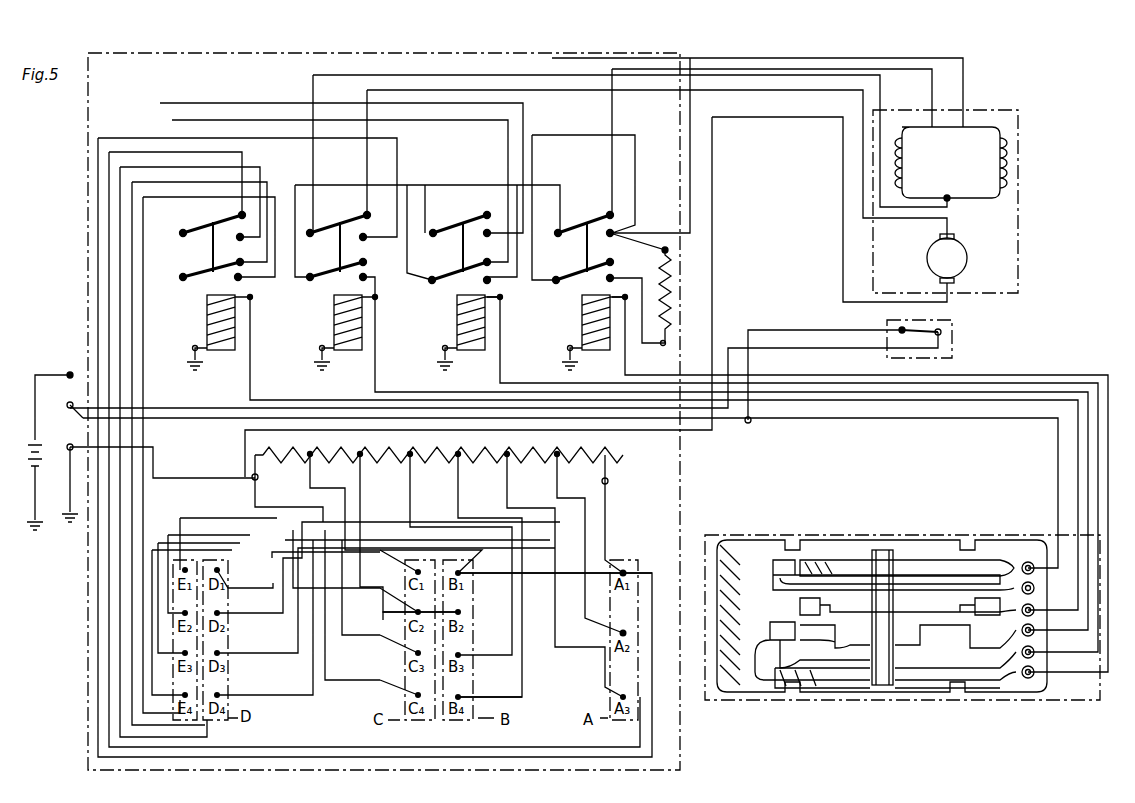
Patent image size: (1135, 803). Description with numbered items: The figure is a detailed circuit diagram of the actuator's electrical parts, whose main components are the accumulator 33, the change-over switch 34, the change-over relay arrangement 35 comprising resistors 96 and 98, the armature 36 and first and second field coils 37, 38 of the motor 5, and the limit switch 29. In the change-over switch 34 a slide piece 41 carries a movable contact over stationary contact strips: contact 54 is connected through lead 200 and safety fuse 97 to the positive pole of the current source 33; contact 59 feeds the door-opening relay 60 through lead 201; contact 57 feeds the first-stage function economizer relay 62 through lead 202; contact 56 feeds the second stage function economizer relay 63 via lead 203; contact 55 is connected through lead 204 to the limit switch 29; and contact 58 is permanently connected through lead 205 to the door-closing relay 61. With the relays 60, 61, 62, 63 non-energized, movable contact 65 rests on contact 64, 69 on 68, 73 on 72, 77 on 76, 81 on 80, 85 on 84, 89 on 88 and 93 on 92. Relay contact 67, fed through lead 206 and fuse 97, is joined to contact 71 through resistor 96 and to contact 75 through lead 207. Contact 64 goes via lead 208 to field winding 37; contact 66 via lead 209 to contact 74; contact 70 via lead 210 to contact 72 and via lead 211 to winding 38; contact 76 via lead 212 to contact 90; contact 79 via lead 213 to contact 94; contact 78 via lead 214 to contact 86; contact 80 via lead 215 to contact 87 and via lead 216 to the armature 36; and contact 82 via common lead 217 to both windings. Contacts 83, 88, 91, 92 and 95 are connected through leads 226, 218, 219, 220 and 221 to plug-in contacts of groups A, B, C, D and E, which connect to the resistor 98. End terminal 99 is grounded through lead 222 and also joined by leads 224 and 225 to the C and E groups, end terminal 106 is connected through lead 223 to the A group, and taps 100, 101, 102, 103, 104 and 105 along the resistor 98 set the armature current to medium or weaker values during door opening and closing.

The motor 5 is at (1018, 240).
The limit switch 29 is at (887, 324).
The accumulator 33 is at (42, 460).
The change-over switch 34 is at (885, 700).
The change-over relay arrangement 35 is at (680, 742).
The armature 36 is at (927, 256).
The first field coil 37 is at (901, 157).
The second field coil 38 is at (1001, 157).
The slide piece 41 is at (882, 550).
The stationary contact strip 54 is at (838, 560).
The stationary contact 55 is at (780, 560).
The stationary contact 56 is at (798, 605).
The stationary contact 57 is at (830, 625).
The stationary contact 58 is at (765, 622).
The stationary contact 59 is at (825, 688).
The door-opening relay 60 is at (595, 352).
The door-closing relay 61 is at (470, 352).
The first-stage function economizer relay 62 is at (347, 352).
The second stage function economizer relay 63 is at (220, 352).
The stationary contact 64 is at (606, 210).
The movable relay contact 65 is at (586, 225).
The relay contact 66 is at (557, 221).
The relay contact 67 is at (602, 242).
The stationary contact 68 is at (614, 262).
The movable relay contact 69 is at (578, 274).
The relay contact 70 is at (555, 269).
The relay contact 71 is at (614, 280).
The stationary contact 72 is at (484, 212).
The movable relay contact 73 is at (461, 225).
The relay contact 74 is at (434, 221).
The relay contact 75 is at (478, 240).
The stationary contact 76 is at (491, 262).
The movable relay contact 77 is at (455, 274).
The relay contact 78 is at (433, 269).
The relay contact 79 is at (491, 281).
The stationary contact 80 is at (365, 212).
The movable relay contact 81 is at (339, 225).
The relay contact 82 is at (318, 221).
The relay contact 83 is at (354, 242).
The stationary contact 84 is at (367, 258).
The movable relay contact 85 is at (330, 272).
The relay contact 86 is at (309, 267).
The relay contact 87 is at (367, 278).
The stationary contact 88 is at (240, 213).
The movable relay contact 89 is at (212, 225).
The relay contact 90 is at (179, 221).
The relay contact 91 is at (230, 240).
The stationary contact 92 is at (244, 262).
The movable relay contact 93 is at (205, 272).
The relay contact 94 is at (177, 268).
The relay contact 95 is at (242, 278).
The resistor 96 is at (670, 305).
The safety fuse 97 is at (68, 398).
The resistor 98 is at (437, 455).
The end terminal 99 is at (258, 480).
The tap 100 is at (315, 458).
The tap 101 is at (365, 458).
The tap 102 is at (415, 458).
The intermediate tap 103 is at (463, 458).
The intermediate tap 104 is at (512, 458).
The intermediate tap 105 is at (562, 458).
The end terminal 106 is at (608, 481).
The lead 200 is at (1005, 420).
The lead 201 is at (960, 375).
The lead 202 is at (1008, 392).
The lead 203 is at (955, 400).
The lead 204 is at (762, 348).
The lead 205 is at (820, 383).
The lead 206 is at (700, 325).
The connecting lead 207 is at (574, 135).
The lead 208 is at (755, 78).
The lead 209 is at (462, 185).
The lead 210 is at (534, 283).
The lead 211 is at (712, 62).
The lead 212 is at (222, 120).
The lead 213 is at (180, 103).
The lead 214 is at (407, 185).
The lead 215 is at (396, 273).
The lead 216 is at (408, 90).
The common lead 217 is at (345, 75).
The lead 218 is at (130, 152).
The lead 219 is at (120, 250).
The lead 220 is at (132, 270).
The lead 221 is at (143, 292).
The lead 222 is at (158, 452).
The lead 223 is at (605, 527).
The lead 224 is at (252, 507).
The lead 225 is at (318, 692).
The lead 226 is at (530, 770).